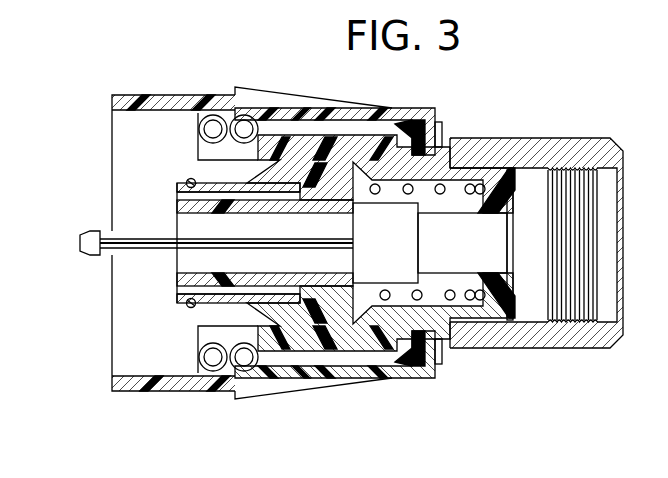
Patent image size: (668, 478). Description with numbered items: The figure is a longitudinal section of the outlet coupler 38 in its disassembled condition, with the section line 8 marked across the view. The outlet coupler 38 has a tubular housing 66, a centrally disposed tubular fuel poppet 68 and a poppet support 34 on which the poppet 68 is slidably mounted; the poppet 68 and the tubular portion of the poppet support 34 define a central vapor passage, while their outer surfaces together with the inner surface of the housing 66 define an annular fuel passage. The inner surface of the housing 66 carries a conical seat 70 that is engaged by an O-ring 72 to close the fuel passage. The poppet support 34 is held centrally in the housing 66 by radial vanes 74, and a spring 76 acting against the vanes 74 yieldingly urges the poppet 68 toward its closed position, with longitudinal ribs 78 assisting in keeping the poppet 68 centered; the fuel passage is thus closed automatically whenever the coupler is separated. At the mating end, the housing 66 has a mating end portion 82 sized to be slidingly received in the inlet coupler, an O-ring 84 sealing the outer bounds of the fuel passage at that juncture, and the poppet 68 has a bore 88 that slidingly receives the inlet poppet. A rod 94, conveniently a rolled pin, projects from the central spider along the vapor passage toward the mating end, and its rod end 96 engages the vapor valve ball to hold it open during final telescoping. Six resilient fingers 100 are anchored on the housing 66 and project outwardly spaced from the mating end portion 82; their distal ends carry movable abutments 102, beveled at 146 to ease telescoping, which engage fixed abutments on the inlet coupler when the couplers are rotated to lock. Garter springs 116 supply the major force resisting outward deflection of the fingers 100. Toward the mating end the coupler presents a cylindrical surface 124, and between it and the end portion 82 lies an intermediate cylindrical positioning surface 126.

The section line 8- 8 is at (215, 447).
The poppet support 34 is at (497, 290).
The outlet coupler 38 is at (549, 110).
The tubular housing 66 is at (582, 138).
The tubular fuel poppet 68 is at (470, 153).
The conical seat 70 is at (350, 345).
The O-ring 72 is at (400, 350).
The radial vanes 74 is at (507, 290).
The spring 76 is at (467, 282).
The longitudinal ribs 78 is at (268, 318).
The mating end portion 82 is at (266, 142).
The O-ring 84 is at (194, 308).
The bore 88 is at (195, 262).
The rod 94 is at (148, 238).
The rod end 96 is at (90, 232).
The fingers 100 is at (362, 122).
The movable abutments 102 is at (203, 170).
The garter springs 116 is at (200, 362).
The cylindrical surface 124 is at (390, 118).
The positioning surface 126 is at (318, 335).
The beveled surfaces 146 is at (197, 316).